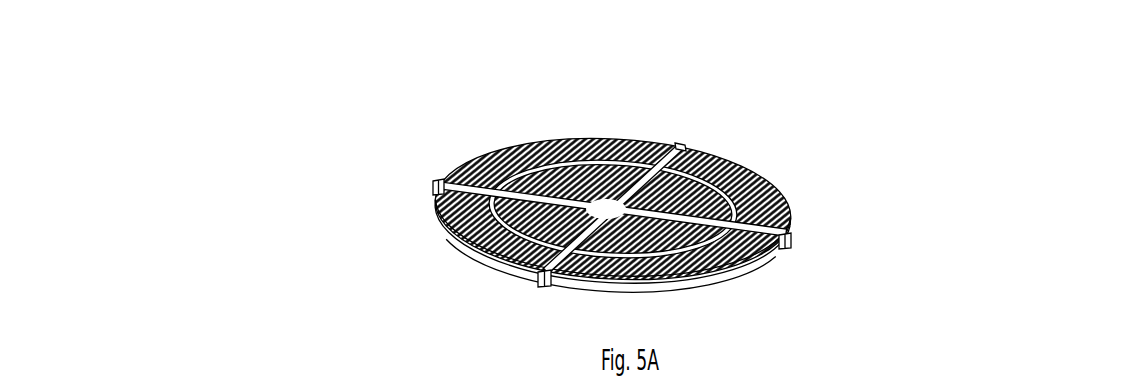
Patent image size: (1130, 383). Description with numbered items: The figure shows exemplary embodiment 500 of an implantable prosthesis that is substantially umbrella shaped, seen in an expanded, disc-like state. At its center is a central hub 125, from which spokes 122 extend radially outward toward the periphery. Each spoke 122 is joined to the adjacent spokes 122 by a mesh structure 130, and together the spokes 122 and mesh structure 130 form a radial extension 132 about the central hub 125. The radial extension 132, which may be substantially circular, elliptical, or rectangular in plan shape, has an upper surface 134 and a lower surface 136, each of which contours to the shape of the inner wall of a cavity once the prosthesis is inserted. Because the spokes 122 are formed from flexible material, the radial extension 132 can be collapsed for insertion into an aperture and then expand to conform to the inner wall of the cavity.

The exemplary embodiment 500 is at (992, 79).
The spokes 122 is at (432, 168).
The central hub 125 is at (557, 132).
The mesh structure 130 is at (758, 170).
The radial extension 132 is at (750, 250).
The upper surface 134 is at (590, 195).
The lower surface 136 is at (673, 272).